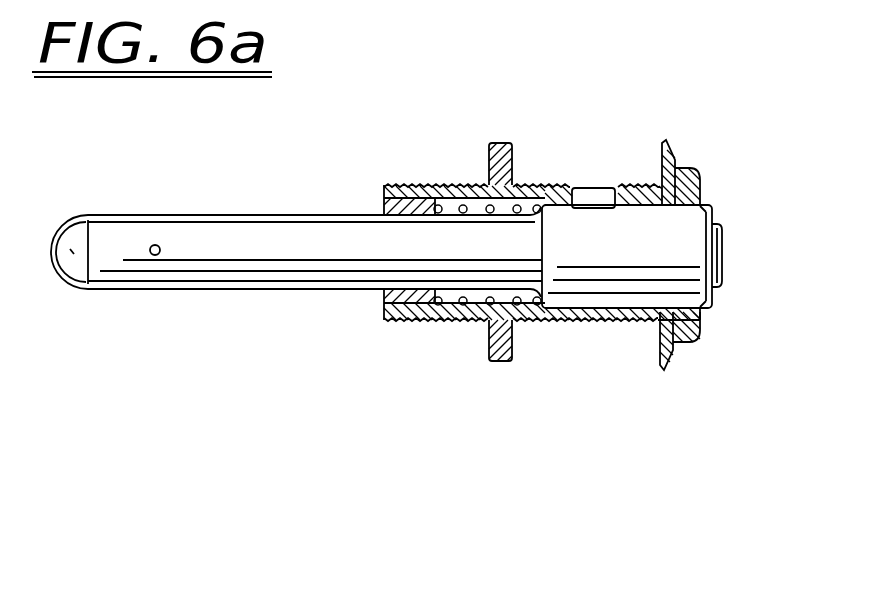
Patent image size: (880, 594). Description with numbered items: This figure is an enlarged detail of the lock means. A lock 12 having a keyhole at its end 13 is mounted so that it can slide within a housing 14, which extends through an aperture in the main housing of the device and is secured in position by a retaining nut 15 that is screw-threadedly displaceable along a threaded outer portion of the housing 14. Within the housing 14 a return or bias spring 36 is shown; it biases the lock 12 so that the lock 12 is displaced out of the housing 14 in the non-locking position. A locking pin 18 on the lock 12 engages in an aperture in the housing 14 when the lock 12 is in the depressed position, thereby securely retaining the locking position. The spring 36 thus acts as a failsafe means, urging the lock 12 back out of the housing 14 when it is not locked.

The lock 12 is at (722, 305).
The end 13 is at (723, 248).
The housing 14 is at (458, 190).
The retaining nut 15 is at (490, 352).
The pin 18 is at (594, 198).
The return or bias spring 36 is at (441, 206).